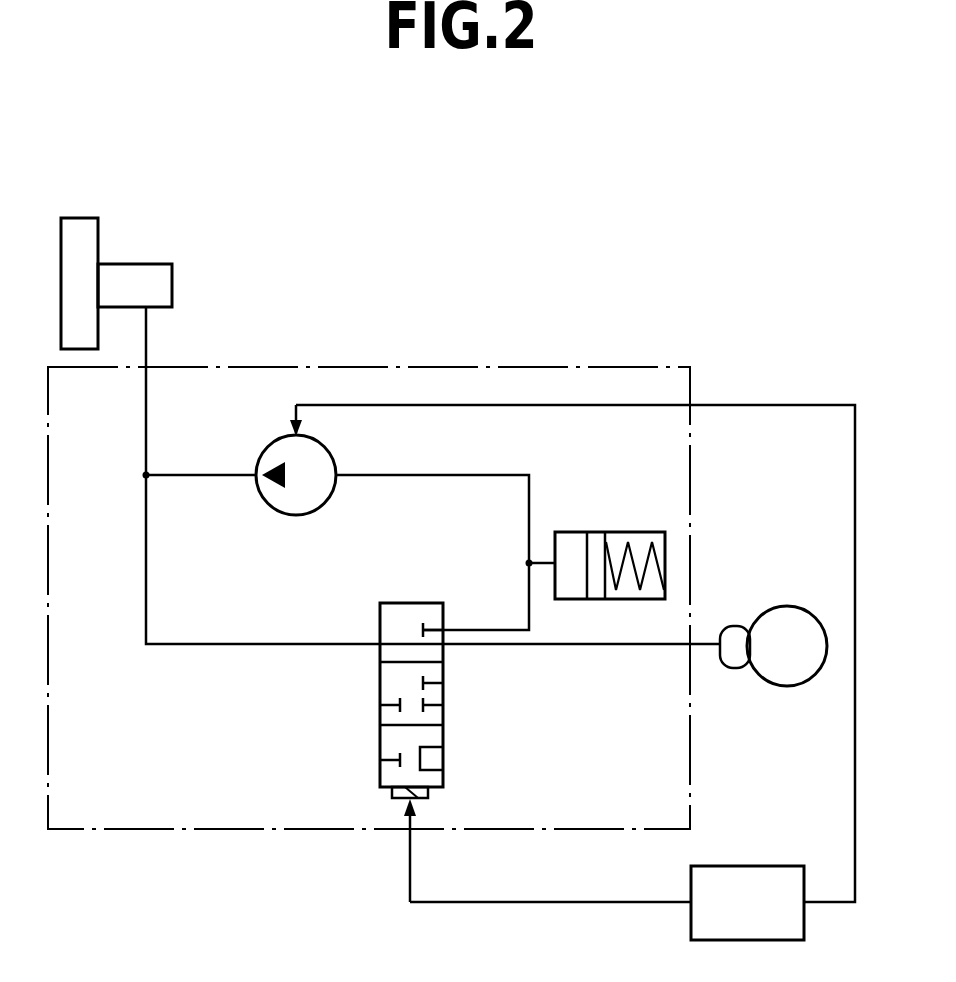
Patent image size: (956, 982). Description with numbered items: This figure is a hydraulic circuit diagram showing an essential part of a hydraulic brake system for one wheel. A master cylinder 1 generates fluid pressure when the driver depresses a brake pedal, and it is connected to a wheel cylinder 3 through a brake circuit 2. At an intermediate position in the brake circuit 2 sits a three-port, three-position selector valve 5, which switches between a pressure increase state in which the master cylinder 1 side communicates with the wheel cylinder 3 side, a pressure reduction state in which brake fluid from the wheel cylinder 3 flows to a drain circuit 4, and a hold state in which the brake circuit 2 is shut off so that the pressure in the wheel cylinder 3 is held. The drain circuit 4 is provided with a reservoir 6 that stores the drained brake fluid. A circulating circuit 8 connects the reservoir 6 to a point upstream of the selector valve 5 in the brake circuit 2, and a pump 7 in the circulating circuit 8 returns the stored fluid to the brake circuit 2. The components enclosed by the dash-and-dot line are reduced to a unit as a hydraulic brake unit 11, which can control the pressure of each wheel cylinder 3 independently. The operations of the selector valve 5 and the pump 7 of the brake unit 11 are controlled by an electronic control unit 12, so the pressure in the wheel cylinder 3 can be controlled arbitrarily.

The master cylinder 1 is at (138, 263).
The brake circuit 2 is at (150, 348).
The wheel cylinder 3 is at (733, 625).
The drain circuit 4 is at (527, 590).
The selector valve 5 is at (380, 676).
The reservoir 6 is at (617, 530).
The pump 7 is at (272, 507).
The circulating circuit 8 is at (193, 474).
The hydraulic brake unit 11 is at (612, 368).
The electronic control unit 12 is at (762, 866).